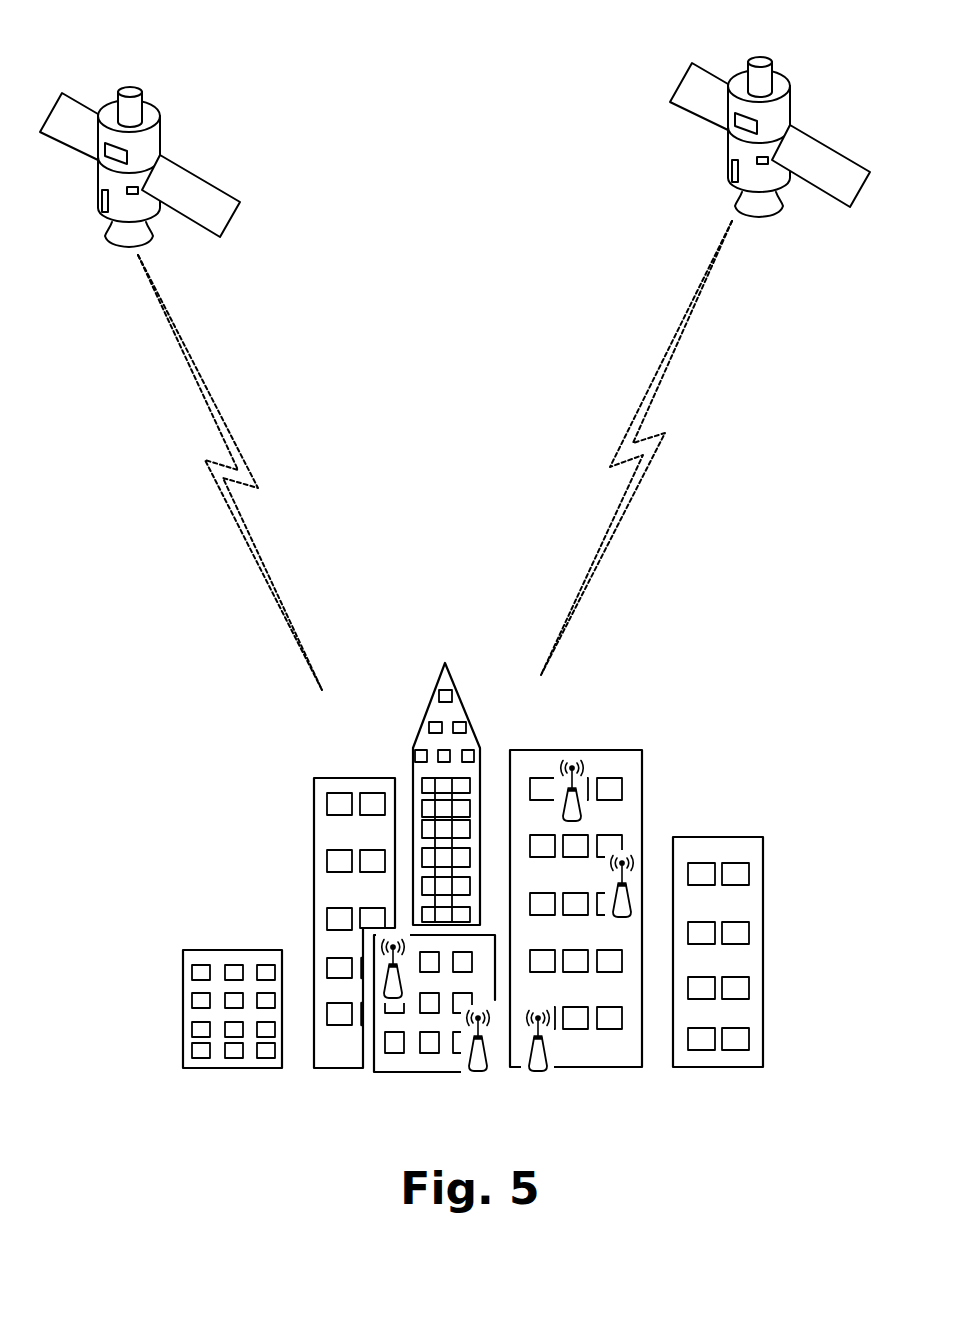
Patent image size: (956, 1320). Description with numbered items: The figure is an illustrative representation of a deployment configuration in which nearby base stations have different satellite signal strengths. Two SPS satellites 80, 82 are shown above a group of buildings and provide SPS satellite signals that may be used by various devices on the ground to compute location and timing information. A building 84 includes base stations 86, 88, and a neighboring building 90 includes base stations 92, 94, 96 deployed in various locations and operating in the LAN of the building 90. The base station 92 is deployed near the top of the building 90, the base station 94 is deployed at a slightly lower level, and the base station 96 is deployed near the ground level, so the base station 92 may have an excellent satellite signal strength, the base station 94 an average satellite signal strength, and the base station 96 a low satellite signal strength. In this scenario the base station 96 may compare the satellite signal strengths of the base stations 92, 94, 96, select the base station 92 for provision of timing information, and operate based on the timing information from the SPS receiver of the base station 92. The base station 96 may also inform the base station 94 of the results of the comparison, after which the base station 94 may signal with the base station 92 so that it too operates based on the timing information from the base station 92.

The SPS satellite 80 is at (161, 136).
The SPS satellite 82 is at (791, 102).
The building 84 is at (374, 1072).
The base station 86 is at (478, 1072).
The base station 88 is at (388, 966).
The building 90 is at (643, 758).
The base station 92 is at (572, 790).
The base station 94 is at (622, 885).
The base station 96 is at (538, 1072).